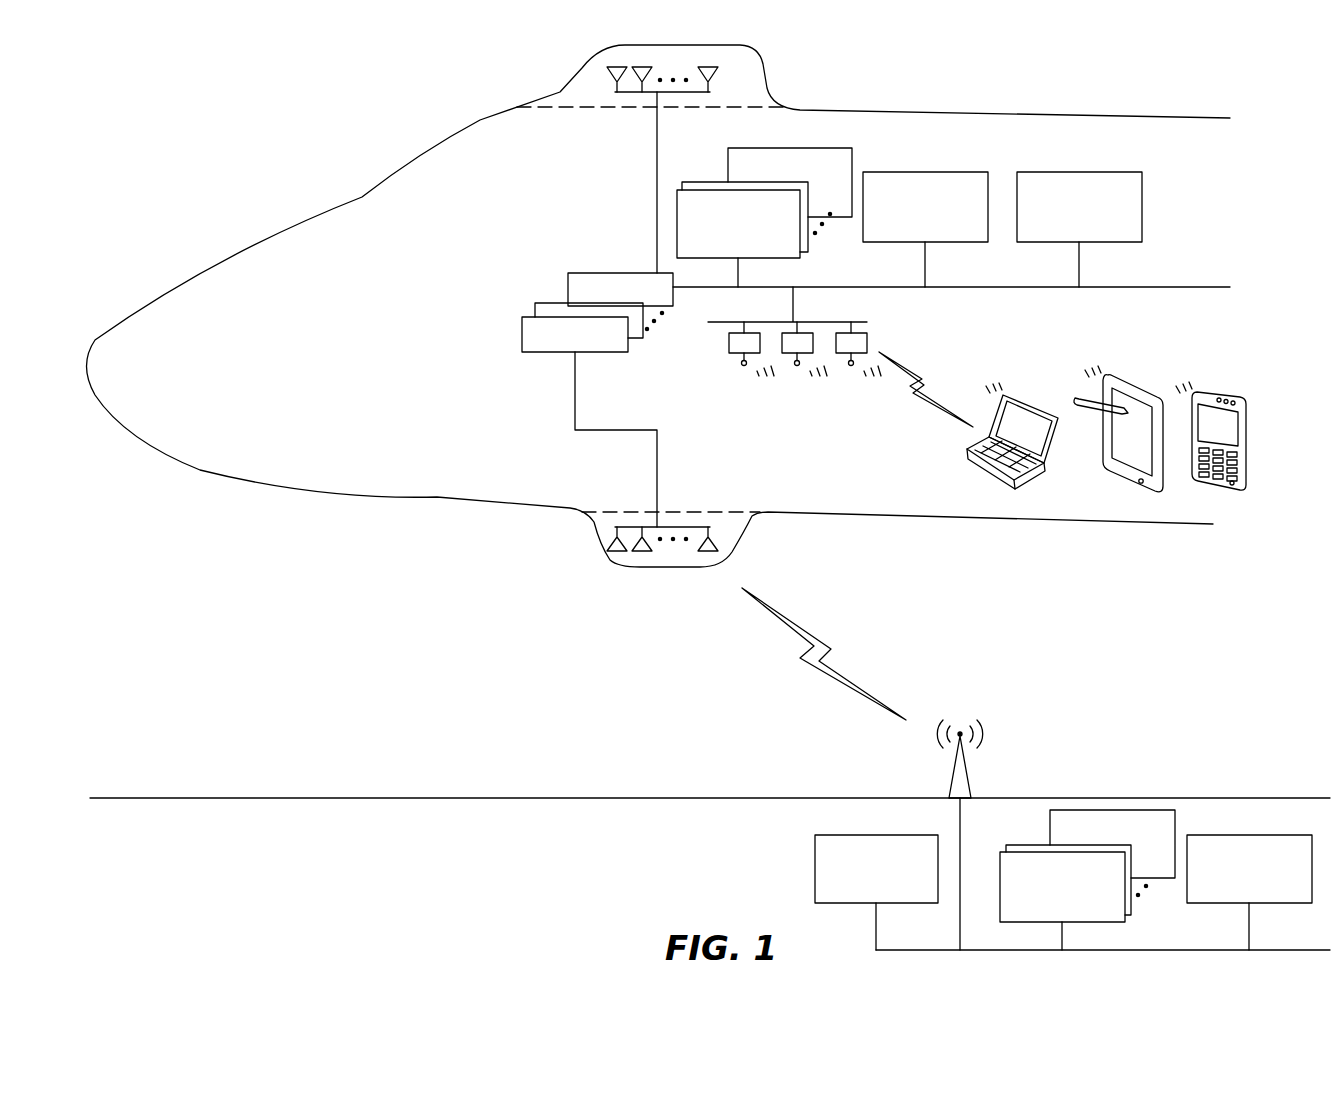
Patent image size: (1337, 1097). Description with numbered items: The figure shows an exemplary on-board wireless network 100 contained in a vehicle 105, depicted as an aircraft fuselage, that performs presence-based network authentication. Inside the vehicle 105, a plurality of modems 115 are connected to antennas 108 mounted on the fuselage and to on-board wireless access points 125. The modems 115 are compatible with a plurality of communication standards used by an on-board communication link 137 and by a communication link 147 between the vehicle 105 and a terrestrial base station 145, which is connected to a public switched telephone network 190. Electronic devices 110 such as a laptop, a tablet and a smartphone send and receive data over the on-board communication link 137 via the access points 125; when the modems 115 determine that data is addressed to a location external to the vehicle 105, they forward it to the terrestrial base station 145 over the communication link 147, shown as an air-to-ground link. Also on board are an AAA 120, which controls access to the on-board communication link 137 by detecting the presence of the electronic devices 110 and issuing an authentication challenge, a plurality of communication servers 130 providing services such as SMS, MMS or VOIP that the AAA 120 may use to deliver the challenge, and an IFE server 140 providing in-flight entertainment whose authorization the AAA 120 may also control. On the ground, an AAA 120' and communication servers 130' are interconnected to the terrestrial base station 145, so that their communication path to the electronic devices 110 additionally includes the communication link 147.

The on-board wireless network 100 is at (243, 108).
The vehicle 105 is at (170, 458).
The antenna 108 is at (637, 569).
The electronic devices 110 is at (1025, 478).
The modems 115 is at (567, 286).
The AAA 120 is at (925, 214).
The AAA 120' is at (1255, 856).
The on-board wireless access point 125 is at (870, 322).
The communication servers 130 is at (764, 203).
The communication servers 130' is at (1108, 856).
The on-board communication link 137 is at (922, 376).
The IFE server 140 is at (1098, 172).
The terrestrial base station 145 is at (968, 780).
The communication link 147 is at (822, 637).
The public switched telephone network (PSTN) 190 is at (870, 835).